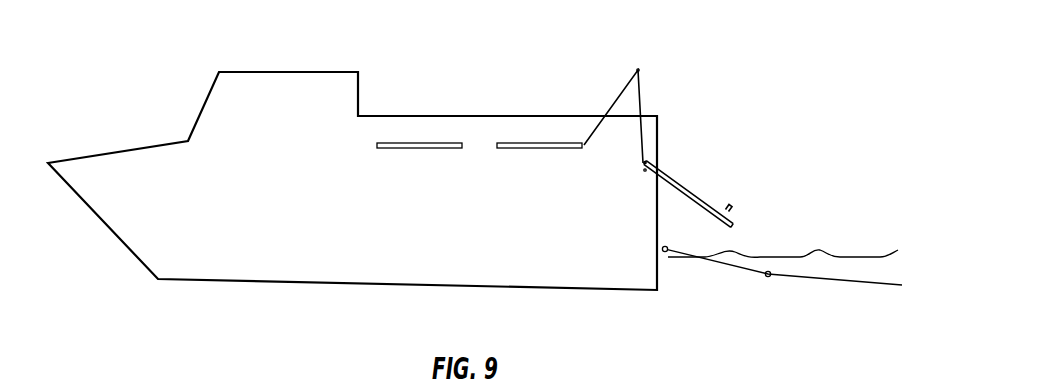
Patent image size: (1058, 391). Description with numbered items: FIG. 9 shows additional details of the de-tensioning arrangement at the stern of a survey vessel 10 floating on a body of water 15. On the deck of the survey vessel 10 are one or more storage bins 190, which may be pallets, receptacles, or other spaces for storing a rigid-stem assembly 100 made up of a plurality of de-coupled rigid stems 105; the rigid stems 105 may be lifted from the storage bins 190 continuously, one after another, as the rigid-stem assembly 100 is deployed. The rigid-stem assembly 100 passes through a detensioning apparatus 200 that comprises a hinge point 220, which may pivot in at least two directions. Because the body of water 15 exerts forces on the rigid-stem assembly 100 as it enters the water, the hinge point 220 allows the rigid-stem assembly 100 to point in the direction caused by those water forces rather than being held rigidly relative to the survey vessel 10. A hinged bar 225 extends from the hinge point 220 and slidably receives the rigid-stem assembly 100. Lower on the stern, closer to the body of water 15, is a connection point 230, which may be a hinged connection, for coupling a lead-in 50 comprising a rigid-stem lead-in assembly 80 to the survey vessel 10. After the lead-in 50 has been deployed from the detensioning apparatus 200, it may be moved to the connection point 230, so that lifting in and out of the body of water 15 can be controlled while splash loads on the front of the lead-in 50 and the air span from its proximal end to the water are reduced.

The survey vessel 10 is at (400, 286).
The body of water 15 is at (846, 317).
The lead-in 50 is at (766, 245).
The rigid-stem lead-in assembly 80 is at (751, 281).
The rigid-stem assembly 100 is at (645, 64).
The rigid stem 105 is at (612, 110).
The storage bin 190 is at (418, 150).
The detensioning apparatus 200 is at (645, 180).
The hinge point 220 is at (652, 160).
The hinged bar 225 is at (692, 192).
The connection point 230 is at (665, 253).